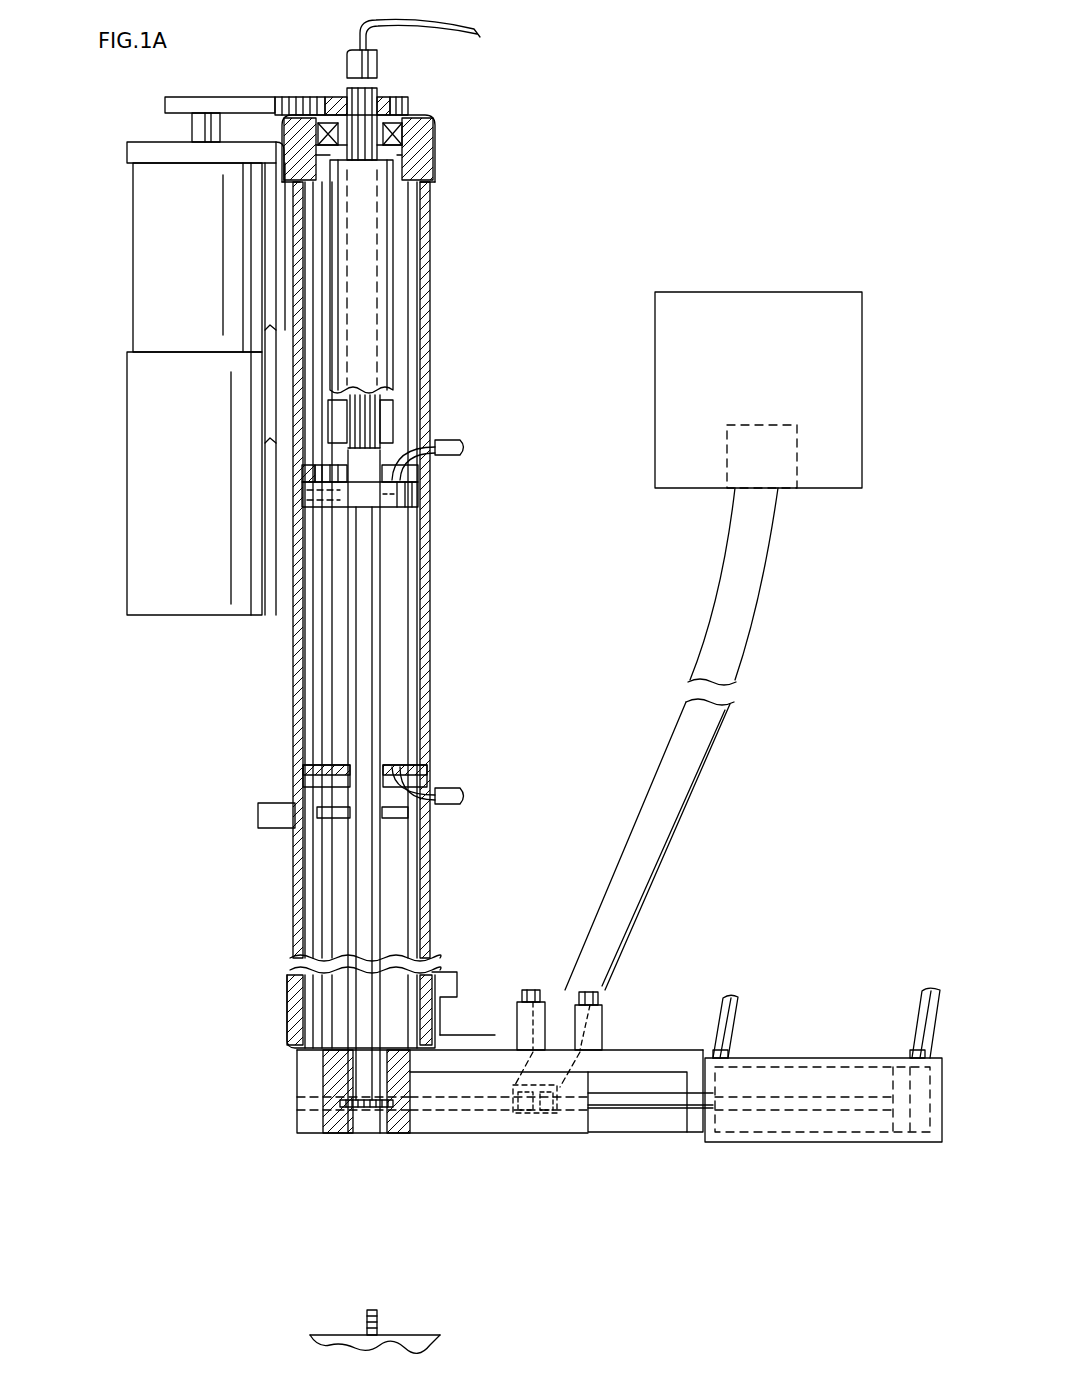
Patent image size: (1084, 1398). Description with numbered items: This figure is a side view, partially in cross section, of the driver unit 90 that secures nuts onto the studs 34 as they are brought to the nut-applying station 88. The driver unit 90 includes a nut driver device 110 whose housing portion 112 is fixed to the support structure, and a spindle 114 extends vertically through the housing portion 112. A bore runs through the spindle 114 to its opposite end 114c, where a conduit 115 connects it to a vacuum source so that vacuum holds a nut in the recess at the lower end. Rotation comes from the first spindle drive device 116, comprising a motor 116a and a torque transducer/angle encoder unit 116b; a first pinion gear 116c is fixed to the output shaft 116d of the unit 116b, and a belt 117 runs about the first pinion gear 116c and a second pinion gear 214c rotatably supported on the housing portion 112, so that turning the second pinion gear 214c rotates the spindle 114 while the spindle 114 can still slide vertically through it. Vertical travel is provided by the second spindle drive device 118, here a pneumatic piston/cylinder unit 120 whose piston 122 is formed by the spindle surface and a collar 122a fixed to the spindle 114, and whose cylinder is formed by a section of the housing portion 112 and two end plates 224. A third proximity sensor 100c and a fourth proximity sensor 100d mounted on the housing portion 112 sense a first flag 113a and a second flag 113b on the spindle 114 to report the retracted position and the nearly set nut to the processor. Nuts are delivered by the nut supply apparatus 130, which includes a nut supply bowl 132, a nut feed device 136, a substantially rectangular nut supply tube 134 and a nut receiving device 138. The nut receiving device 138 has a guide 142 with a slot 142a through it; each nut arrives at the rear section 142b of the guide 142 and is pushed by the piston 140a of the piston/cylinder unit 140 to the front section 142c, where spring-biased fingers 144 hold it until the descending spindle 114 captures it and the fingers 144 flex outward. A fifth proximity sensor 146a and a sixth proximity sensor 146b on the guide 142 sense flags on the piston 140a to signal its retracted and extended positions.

The stud 34 is at (375, 1318).
The nut-applying station 88 is at (222, 1090).
The driver unit 90 is at (448, 256).
The third proximity sensor 100c is at (258, 810).
The fourth proximity sensor 100d is at (440, 970).
The nut driver device 110 is at (458, 311).
The housing portion 112 is at (427, 700).
The first flag 113a is at (337, 818).
The second flag 113b is at (393, 818).
The spindle 114 is at (377, 670).
The opposite end of the spindle 114c is at (382, 62).
The conduit 115 is at (479, 40).
The first spindle drive device 116 is at (140, 337).
The motor 116a is at (148, 438).
The torque transducer/angle encoder unit 116b is at (148, 266).
The first pinion gear 116c is at (205, 96).
The output shaft 116d is at (190, 124).
The belt 117 is at (263, 100).
The second spindle drive device 118 is at (413, 573).
The pneumatic piston/cylinder unit 120 is at (430, 597).
The piston 122 is at (413, 495).
The collar 122a is at (352, 495).
The nut supply apparatus 130 is at (808, 273).
The nut supply bowl 132 is at (853, 353).
The nut supply tube 134 is at (752, 625).
The nut feed device 136 is at (798, 450).
The nut receiving device 138 is at (637, 1040).
The piston/cylinder unit 140 is at (772, 1055).
The piston 140a is at (657, 1110).
The guide 142 is at (503, 1125).
The slot 142a is at (455, 1113).
The rear section 142b is at (573, 1125).
The front section 142c is at (303, 1110).
The spring-biased fingers 144 is at (348, 1110).
The fifth proximity sensor 146a is at (595, 1022).
The sixth proximity sensor 146b is at (520, 1023).
The second pinion gear 214c is at (385, 95).
The end plates 224 is at (412, 462).